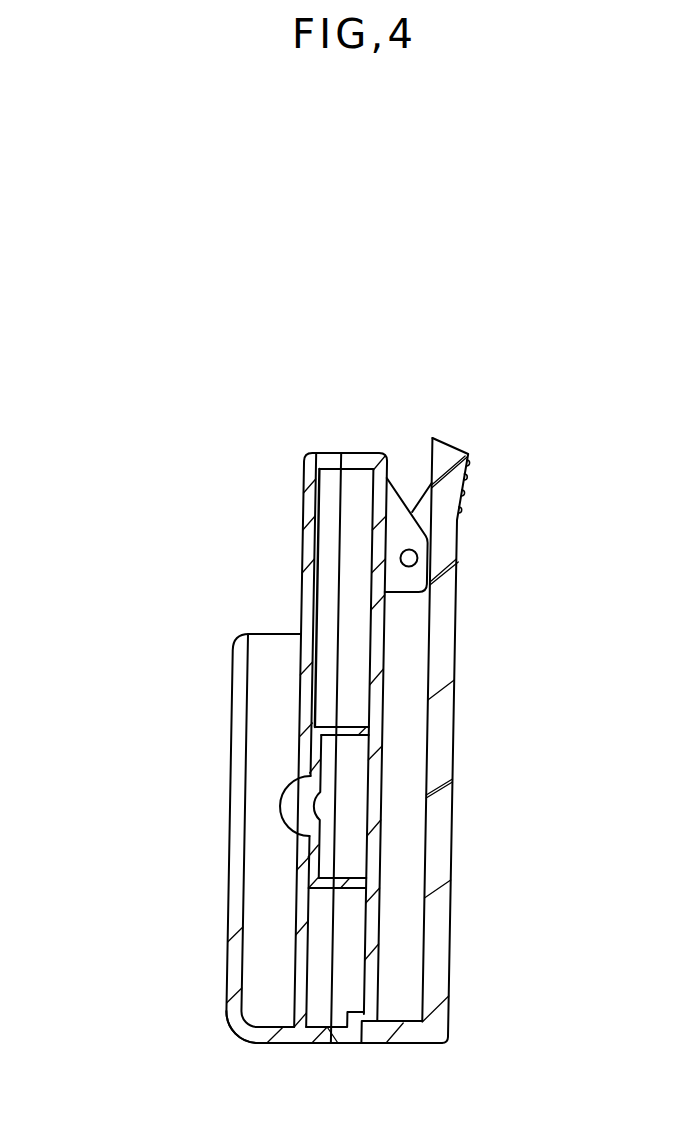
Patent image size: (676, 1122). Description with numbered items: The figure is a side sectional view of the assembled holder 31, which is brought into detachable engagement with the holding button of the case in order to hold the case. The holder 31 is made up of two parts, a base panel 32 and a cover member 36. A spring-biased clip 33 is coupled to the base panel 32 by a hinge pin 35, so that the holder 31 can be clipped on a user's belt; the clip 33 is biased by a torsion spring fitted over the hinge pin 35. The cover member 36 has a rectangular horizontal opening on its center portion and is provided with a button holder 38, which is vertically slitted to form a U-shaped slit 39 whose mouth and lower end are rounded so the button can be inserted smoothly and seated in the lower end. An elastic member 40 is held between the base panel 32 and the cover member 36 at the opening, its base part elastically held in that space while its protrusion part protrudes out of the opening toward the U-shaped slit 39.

The holder 31 is at (271, 533).
The base panel 32 is at (365, 1043).
The spring-biased clip 33 is at (438, 818).
The hinge pin 35 is at (422, 552).
The cover member 36 is at (247, 1033).
The button holder 38 is at (241, 988).
The U-shaped slit 39 is at (239, 892).
The elastic member 40 is at (325, 728).